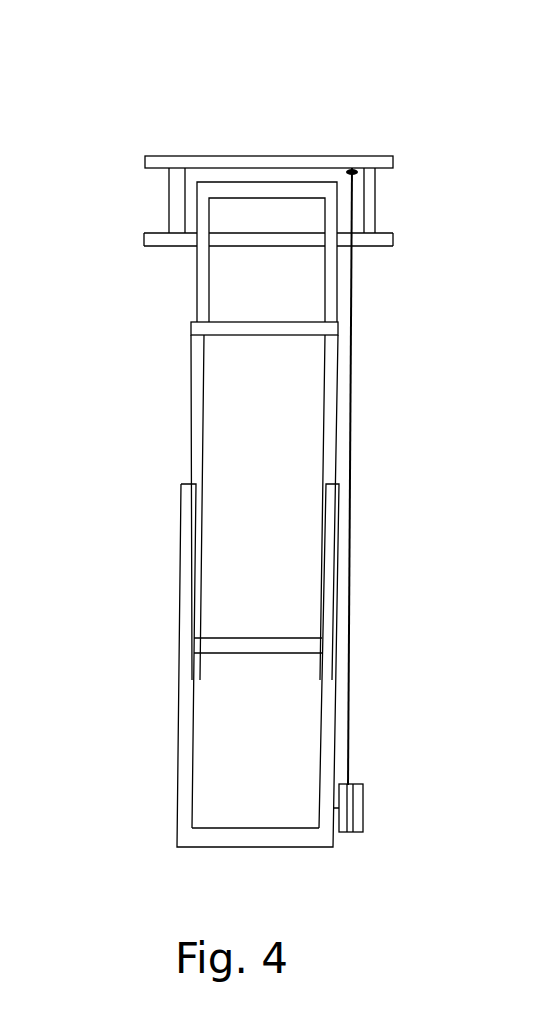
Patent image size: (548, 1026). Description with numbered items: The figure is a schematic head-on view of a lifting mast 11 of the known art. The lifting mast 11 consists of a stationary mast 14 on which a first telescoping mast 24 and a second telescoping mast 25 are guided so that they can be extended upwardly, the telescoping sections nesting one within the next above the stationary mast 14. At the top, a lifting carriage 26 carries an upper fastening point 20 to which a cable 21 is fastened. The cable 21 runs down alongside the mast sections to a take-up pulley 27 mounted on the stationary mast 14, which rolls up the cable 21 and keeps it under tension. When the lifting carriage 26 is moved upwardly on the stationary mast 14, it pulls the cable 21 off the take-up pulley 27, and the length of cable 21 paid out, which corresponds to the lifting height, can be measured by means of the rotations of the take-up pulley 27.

The lifting mast 11 is at (362, 106).
The lifting carriage 26 is at (157, 161).
The upper fastening point 20 is at (355, 173).
The second telescoping mast 25 is at (197, 273).
The first telescoping mast 24 is at (192, 423).
The cable 21 is at (347, 687).
The stationary mast 14 is at (190, 767).
The take-up pulley 27 is at (363, 807).